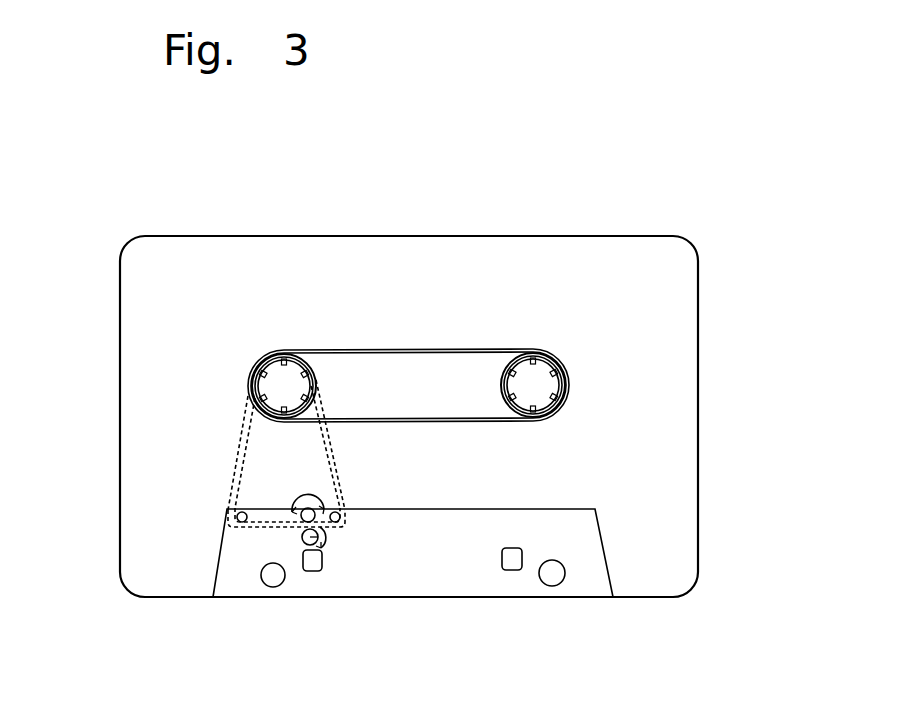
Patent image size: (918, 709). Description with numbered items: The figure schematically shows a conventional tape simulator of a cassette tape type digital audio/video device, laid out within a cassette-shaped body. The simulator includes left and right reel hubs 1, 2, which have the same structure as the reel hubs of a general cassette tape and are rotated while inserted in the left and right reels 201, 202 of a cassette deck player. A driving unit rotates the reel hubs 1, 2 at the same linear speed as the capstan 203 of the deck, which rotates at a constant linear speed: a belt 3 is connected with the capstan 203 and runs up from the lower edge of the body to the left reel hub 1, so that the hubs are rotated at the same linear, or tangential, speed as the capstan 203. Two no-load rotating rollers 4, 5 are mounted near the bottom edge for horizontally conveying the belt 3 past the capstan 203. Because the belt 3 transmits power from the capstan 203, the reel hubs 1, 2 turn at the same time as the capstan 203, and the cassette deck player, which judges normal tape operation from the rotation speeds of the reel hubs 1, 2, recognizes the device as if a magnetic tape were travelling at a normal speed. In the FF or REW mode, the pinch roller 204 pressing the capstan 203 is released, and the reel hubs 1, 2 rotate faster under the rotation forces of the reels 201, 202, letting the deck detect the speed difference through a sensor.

The left reel hub 1 is at (277, 356).
The right reel hub 2 is at (525, 355).
The left reel 201 is at (282, 390).
The right reel 202 is at (537, 387).
The belt 3 is at (240, 450).
The no-load rotating roller 4 is at (243, 522).
The no-load rotating roller 5 is at (338, 522).
The capstan 203 is at (300, 511).
The pinch roller 204 is at (326, 536).